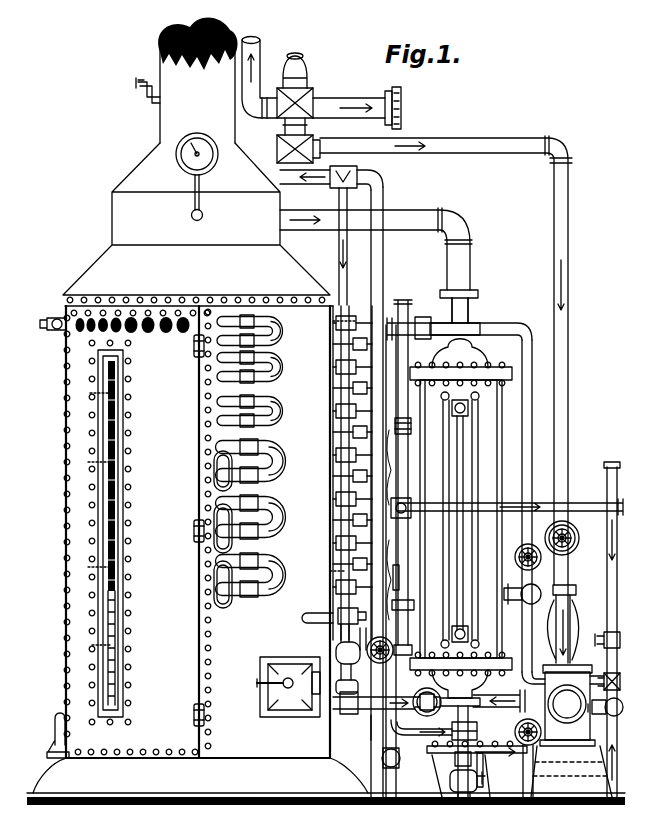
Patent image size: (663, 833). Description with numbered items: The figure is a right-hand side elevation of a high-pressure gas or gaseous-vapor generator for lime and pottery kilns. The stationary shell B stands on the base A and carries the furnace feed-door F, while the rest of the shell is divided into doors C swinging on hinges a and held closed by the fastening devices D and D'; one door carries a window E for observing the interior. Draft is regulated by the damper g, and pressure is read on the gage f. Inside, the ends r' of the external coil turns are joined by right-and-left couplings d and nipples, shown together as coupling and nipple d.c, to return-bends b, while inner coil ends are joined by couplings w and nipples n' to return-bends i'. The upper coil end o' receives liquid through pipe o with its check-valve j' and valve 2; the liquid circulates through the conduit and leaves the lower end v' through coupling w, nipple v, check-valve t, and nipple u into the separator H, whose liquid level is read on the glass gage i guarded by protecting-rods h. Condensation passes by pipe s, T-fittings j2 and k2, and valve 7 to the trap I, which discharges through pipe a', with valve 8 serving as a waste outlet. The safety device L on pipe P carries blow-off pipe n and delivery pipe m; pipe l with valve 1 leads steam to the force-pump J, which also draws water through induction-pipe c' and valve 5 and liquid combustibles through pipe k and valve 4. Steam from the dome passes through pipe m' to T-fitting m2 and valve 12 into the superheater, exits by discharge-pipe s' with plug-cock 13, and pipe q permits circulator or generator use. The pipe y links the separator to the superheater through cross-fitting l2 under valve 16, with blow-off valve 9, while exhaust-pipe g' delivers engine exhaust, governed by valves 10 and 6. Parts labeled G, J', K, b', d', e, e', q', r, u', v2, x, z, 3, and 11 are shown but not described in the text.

The base A is at (326, 555).
The shell B is at (251, 485).
The doors C is at (137, 532).
The fastening device D is at (52, 735).
The fastening device D' is at (43, 325).
The window E is at (123, 468).
The feed-door F is at (288, 688).
The pipe stub G is at (317, 625).
The separator H is at (465, 502).
The trap I is at (474, 769).
The force-pump J is at (563, 665).
The pump base J' is at (571, 771).
The steam pipe K is at (385, 265).
The safety device L is at (304, 94).
The pipe P is at (287, 149).
The hinges a is at (192, 530).
The pipe a' is at (413, 660).
The return-bends b is at (287, 451).
The pipe b' is at (514, 779).
The induction-pipe c' is at (607, 670).
The right-and-left couplings d is at (92, 392).
The gauge cock d' is at (92, 514).
The coupling and nipple d.c is at (248, 457).
The return bend e is at (209, 529).
The gauge cock e' is at (95, 644).
The gage f is at (288, 284).
The damper g is at (144, 91).
The exhaust-pipe g' is at (499, 697).
The protecting-rods h is at (464, 520).
The glass gage i is at (462, 521).
The return-bends i' is at (389, 561).
The check-valve j' is at (459, 321).
The T-fitting j2 is at (469, 751).
The pipe k is at (608, 629).
The T-fitting k2 is at (454, 765).
The pipe l is at (452, 399).
The cross-fitting l2 is at (363, 727).
The pipe m is at (357, 105).
The pipe m' is at (331, 235).
The T-fitting m2 is at (373, 710).
The blow-off pipe n is at (260, 78).
The nipples n' is at (358, 431).
The pipe o is at (399, 504).
The end of the upper coil o' is at (333, 328).
The conducting-pipe q is at (383, 492).
The pipe q' is at (364, 739).
The pipe r is at (275, 452).
The ends of the external turns r' is at (214, 454).
The pipe s is at (418, 526).
The discharge-pipe s' is at (510, 501).
The check-valve t is at (408, 577).
The nipple u is at (369, 473).
The pipe u' is at (317, 516).
The nipple v is at (356, 615).
The lower end v' is at (326, 596).
The pipe v2 is at (362, 639).
The right-and-left couplings w is at (346, 477).
The valve x is at (352, 616).
The pipe y is at (409, 646).
The pipe z is at (382, 776).
The valve 1 is at (569, 538).
The valve 2 is at (533, 559).
The valve 3 is at (522, 588).
The valve 4 is at (605, 633).
The valve 5 is at (605, 695).
The valve 6 is at (532, 758).
The valve 7 is at (484, 770).
The valve 8 is at (474, 783).
The valve 9 is at (417, 744).
The valve 10 is at (426, 695).
The valve 11 is at (376, 656).
The valve 12 is at (348, 661).
The plug-cock 13 is at (402, 513).
The valve 16 is at (355, 687).